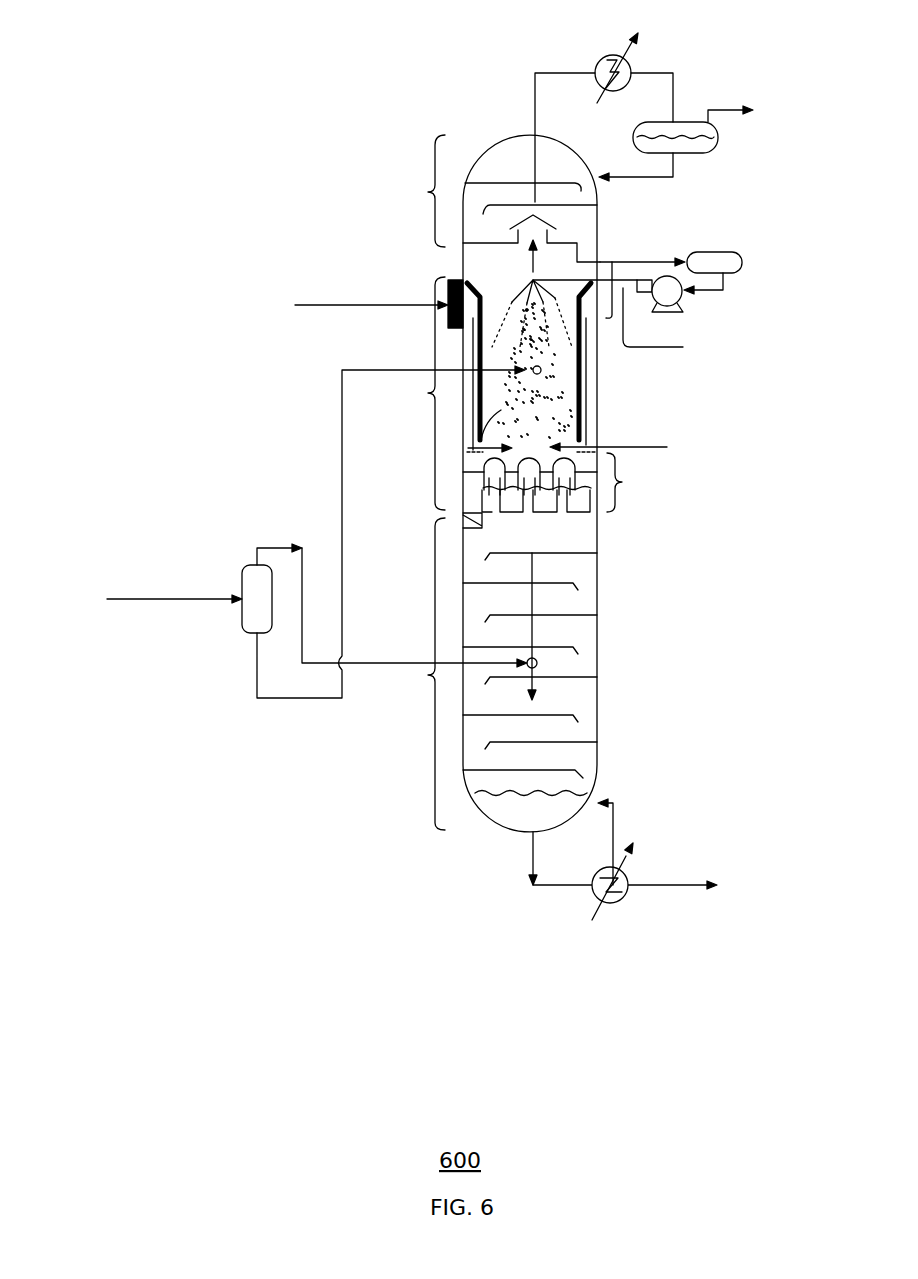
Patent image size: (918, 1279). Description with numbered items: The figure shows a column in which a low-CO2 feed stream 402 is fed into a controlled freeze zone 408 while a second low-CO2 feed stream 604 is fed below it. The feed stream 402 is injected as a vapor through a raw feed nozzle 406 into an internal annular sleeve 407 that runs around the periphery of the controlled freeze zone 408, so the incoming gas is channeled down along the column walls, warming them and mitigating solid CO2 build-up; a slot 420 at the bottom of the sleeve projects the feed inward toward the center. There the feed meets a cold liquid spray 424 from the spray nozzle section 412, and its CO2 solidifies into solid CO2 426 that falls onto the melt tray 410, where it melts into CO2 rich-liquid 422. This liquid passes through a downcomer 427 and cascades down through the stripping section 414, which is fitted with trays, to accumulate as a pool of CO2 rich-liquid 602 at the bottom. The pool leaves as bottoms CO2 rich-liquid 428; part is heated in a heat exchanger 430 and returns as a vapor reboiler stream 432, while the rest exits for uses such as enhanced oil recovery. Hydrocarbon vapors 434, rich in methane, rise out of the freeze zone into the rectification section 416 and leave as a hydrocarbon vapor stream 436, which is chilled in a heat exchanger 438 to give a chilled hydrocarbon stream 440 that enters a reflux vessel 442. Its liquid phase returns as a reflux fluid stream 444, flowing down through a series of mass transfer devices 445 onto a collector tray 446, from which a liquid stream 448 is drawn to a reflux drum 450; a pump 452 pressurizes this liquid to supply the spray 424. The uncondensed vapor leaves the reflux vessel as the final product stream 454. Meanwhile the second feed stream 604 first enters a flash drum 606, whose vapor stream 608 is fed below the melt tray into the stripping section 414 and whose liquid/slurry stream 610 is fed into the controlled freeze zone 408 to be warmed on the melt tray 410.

The pool of CO2 rich-liquid 602 is at (508, 810).
The low-CO2 feed stream 604 is at (132, 598).
The flash drum 606 is at (246, 562).
The vapor stream 608 is at (262, 548).
The liquid/slurry stream 610 is at (340, 513).
The low-CO2 feed stream 402 is at (325, 303).
The raw feed nozzle 406 is at (450, 282).
The internal annular sleeve 407 is at (477, 407).
The controlled freeze zone 408 is at (411, 393).
The melt tray 410 is at (569, 482).
The spray nozzle section 412 is at (675, 324).
The stripping section 414 is at (411, 674).
The rectification section 416 is at (412, 191).
The slot 420 is at (633, 447).
The CO2 rich-liquid 422 is at (582, 500).
The liquid spray 424 is at (724, 284).
The solid CO2 426 is at (466, 450).
The downcomer 427 is at (462, 513).
The bottoms CO2 rich-liquid 428 is at (530, 857).
The heat exchanger 430 is at (623, 903).
The vapor reboiler stream 432 is at (615, 830).
The hydrocarbon vapors 434 is at (530, 259).
The hydrocarbon vapor stream 436 is at (537, 85).
The heat exchanger 438 is at (638, 50).
The chilled hydrocarbon stream 440 is at (675, 92).
The reflux vessel 442 is at (707, 155).
The reflux fluid stream 444 is at (628, 178).
The mass transfer devices 445 is at (500, 183).
The collector tray 446 is at (475, 243).
The liquid stream 448 is at (657, 260).
The reflux drum 450 is at (727, 252).
The pump 452 is at (685, 298).
The final product stream 454 is at (733, 110).